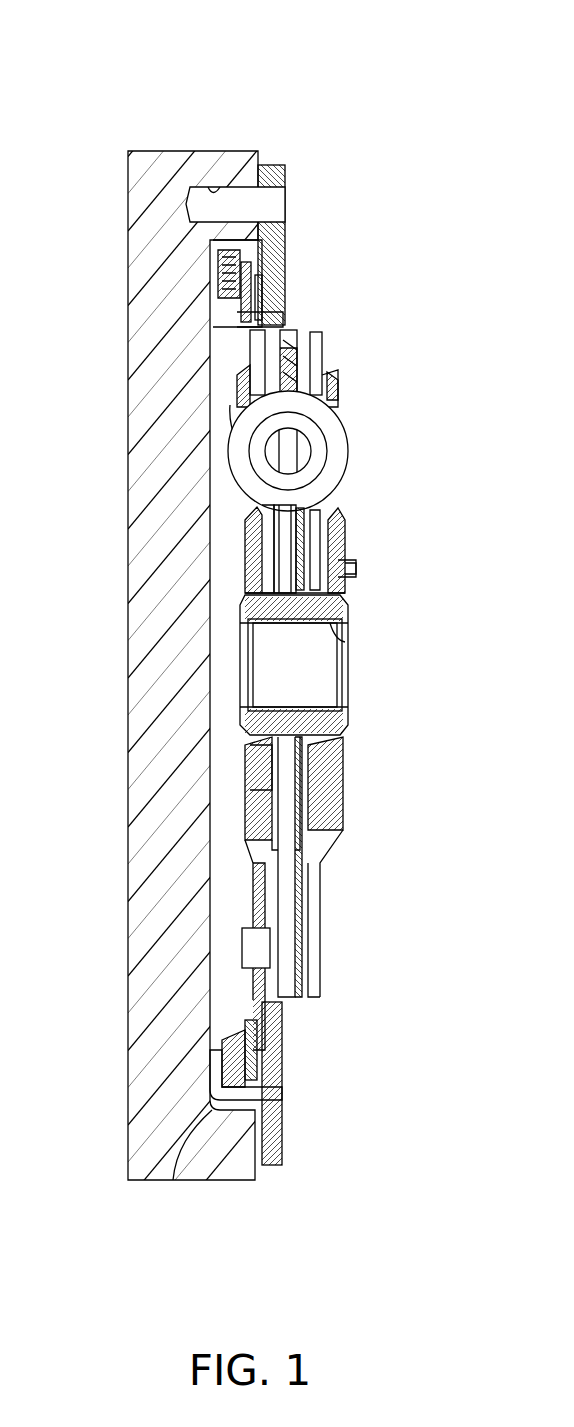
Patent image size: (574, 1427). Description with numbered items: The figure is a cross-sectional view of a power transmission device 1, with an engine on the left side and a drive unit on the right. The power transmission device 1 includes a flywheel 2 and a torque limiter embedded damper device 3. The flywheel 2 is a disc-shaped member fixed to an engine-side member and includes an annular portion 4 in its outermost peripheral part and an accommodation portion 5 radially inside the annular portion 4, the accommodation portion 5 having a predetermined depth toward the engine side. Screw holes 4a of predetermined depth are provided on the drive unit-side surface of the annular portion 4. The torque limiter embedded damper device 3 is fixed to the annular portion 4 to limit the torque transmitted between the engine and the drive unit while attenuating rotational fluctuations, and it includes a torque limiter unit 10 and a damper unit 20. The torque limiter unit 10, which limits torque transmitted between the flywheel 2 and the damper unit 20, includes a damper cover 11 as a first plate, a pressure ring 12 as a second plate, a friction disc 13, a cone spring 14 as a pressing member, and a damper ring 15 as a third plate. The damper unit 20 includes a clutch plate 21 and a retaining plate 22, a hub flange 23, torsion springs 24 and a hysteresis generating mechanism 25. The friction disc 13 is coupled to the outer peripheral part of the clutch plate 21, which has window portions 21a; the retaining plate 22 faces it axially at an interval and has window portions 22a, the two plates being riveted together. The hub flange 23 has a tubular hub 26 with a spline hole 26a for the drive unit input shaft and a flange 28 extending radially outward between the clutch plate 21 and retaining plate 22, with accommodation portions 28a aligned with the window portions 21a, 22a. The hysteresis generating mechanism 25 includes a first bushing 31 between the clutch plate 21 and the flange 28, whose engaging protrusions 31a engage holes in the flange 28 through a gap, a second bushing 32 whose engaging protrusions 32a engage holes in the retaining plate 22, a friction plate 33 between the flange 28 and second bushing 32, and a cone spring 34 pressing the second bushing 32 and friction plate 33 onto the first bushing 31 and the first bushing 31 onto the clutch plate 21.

The power transmission device 1 is at (276, 109).
The flywheel 2 is at (126, 173).
The torque limiter embedded damper device 3 is at (360, 336).
The annular portion 4 is at (250, 158).
The screw hole 4a is at (209, 187).
The accommodation portion 5 is at (215, 342).
The torque limiter unit 10 is at (294, 1037).
The damper cover 11 is at (282, 1140).
The pressure ring 12 is at (250, 1015).
The friction disc 13 is at (173, 1180).
The cone spring 14 is at (217, 1047).
The damper ring 15 is at (217, 1098).
The damper unit 20 is at (340, 945).
The clutch plate 21 is at (311, 333).
The window portion 21a is at (260, 430).
The retaining plate 22 is at (325, 370).
The window portion 22a is at (340, 385).
The hub flange 23 is at (253, 375).
The torsion spring 24 is at (343, 437).
The hysteresis generating mechanism 25 is at (366, 567).
The hub 26 is at (343, 717).
The spline hole 26a is at (343, 640).
The flange 28 is at (250, 787).
The accommodation portion 28a is at (308, 345).
The first bushing 31 is at (250, 582).
The engaging protrusion 31a is at (250, 597).
The second bushing 32 is at (337, 512).
The engaging protrusion 32a is at (353, 577).
The friction plate 33 is at (253, 623).
The cone spring 34 is at (338, 533).